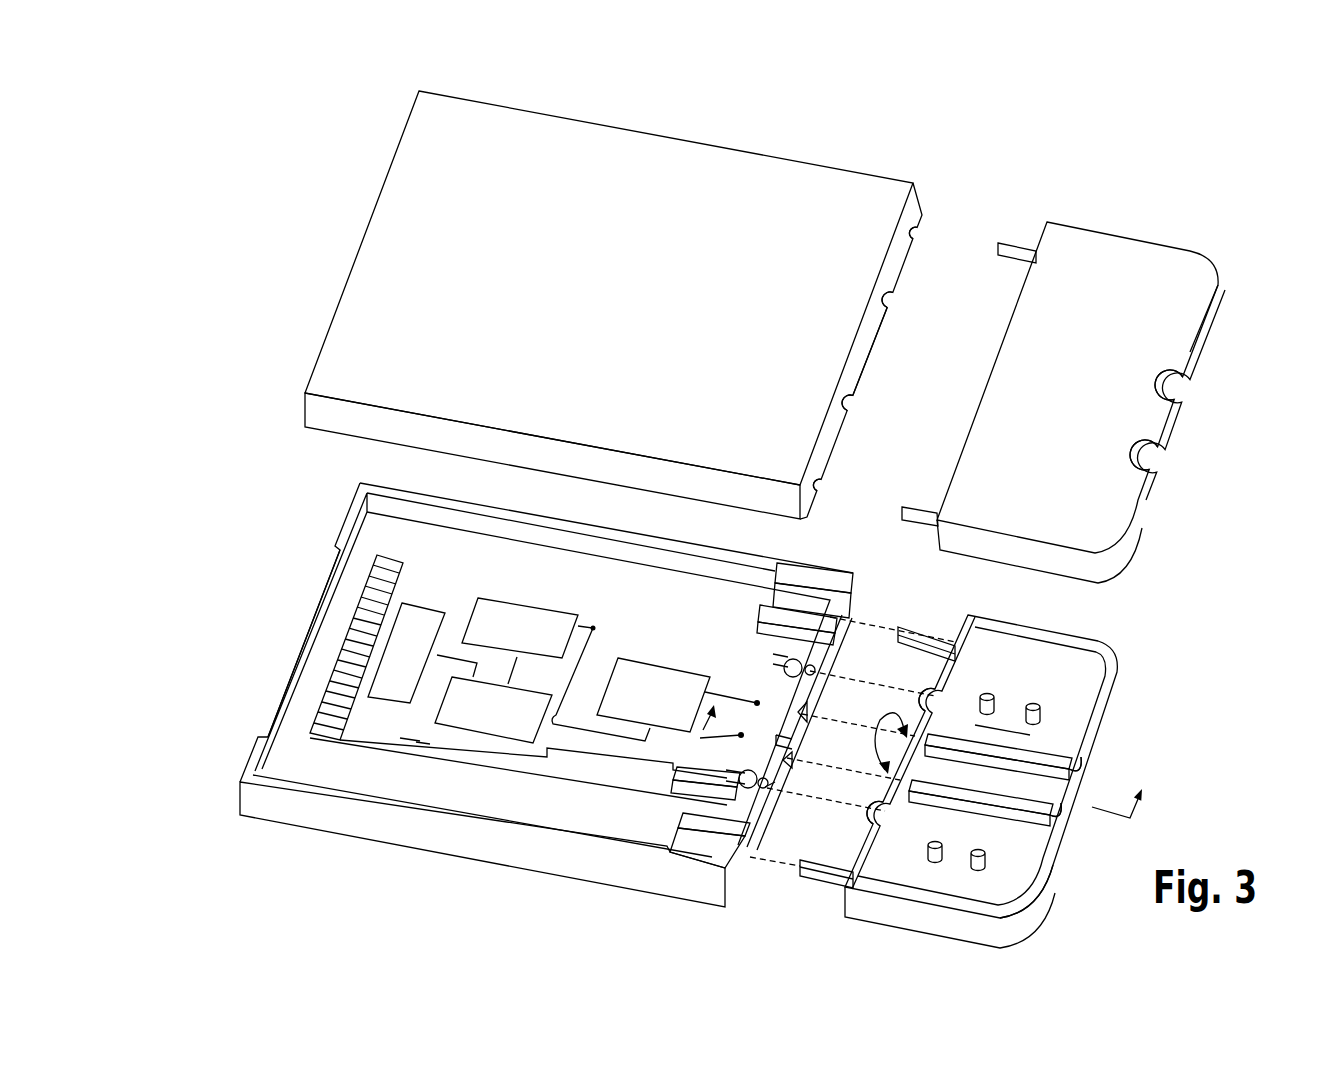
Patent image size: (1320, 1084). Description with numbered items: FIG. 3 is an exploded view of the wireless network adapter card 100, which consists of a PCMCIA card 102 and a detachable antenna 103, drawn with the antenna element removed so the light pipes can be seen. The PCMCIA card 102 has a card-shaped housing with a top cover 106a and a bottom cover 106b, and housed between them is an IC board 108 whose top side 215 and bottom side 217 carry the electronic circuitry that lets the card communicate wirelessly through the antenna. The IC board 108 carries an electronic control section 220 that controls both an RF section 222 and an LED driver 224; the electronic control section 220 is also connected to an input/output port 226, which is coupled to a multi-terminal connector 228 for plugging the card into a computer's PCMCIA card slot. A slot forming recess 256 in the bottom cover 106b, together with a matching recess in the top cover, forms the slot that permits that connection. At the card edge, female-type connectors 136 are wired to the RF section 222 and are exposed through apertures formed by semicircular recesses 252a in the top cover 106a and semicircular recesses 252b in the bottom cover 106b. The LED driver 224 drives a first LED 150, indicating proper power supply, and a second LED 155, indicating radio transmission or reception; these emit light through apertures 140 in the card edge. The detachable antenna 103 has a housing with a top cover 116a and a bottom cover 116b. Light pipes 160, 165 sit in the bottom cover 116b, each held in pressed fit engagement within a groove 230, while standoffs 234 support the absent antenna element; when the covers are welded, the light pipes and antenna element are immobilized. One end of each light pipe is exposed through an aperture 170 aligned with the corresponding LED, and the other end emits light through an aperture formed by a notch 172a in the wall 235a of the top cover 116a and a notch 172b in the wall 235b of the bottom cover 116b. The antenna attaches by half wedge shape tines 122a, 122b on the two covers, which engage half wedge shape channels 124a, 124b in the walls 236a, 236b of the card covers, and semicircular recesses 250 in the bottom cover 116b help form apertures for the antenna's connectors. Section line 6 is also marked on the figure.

The wireless network adapter card 100 is at (268, 277).
The PCMCIA card 102 is at (833, 146).
The detachable antenna 103 is at (1150, 153).
The top cover 106a is at (325, 371).
The bottom cover 106b is at (263, 806).
The integrated circuit board 108 is at (366, 730).
The top cover 116a is at (1170, 253).
The bottom cover 116b is at (1070, 634).
The half wedge shape tine 122a is at (1020, 248).
The half wedge shape tine 122b is at (923, 630).
The half wedge shape channel 124a is at (918, 235).
The half wedge shape channel 124b is at (838, 603).
The female-type connector 136 is at (802, 665).
The aperture 140 is at (812, 716).
The first LED 150 is at (793, 741).
The second LED 155 is at (780, 692).
The light pipe 160 is at (975, 797).
The light pipe 165 is at (1030, 746).
The aperture 170 is at (928, 706).
The notch 172a is at (1185, 381).
The notch 172b is at (1080, 780).
The top side 215 is at (400, 738).
The bottom side 217 is at (418, 742).
The electronic control section 220 is at (493, 740).
The RF section 222 is at (488, 598).
The LED driver 224 is at (640, 662).
The input/output port 226 is at (410, 603).
The multi-terminal connector 228 is at (318, 712).
The groove 230 is at (1012, 735).
The standoff 234 is at (997, 689).
The wall 235a is at (1200, 342).
The wall 235b is at (1045, 878).
The wall 236a is at (860, 347).
The wall 236b is at (818, 668).
The semicircular recess 250 is at (905, 687).
The semicircular recess 252a is at (890, 303).
The semicircular recess 252b is at (768, 788).
The slot forming recess 256 is at (320, 592).
The section line 6- 6 is at (918, 768).